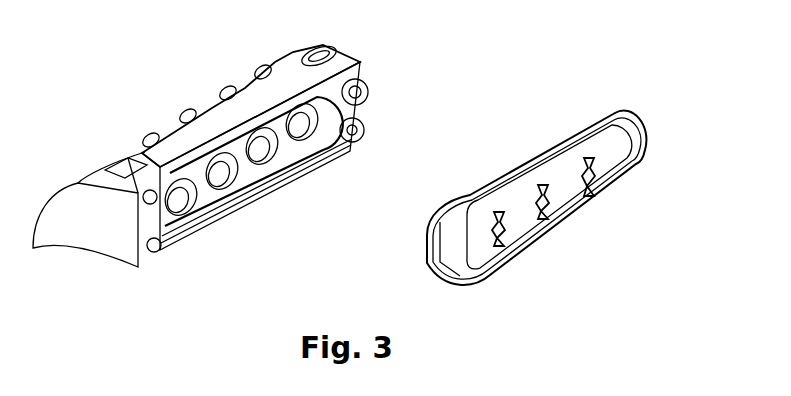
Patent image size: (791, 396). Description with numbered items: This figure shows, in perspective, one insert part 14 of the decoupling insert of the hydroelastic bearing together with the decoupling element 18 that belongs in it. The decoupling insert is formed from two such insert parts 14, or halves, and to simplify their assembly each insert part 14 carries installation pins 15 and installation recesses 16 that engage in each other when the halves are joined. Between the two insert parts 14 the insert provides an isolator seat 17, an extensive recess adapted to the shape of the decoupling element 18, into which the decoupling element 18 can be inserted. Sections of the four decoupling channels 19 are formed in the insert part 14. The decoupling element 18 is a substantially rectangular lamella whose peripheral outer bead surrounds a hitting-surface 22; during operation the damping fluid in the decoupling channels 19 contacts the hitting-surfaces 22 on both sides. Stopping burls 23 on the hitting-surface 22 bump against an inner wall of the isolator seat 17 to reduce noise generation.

The insert part 14 is at (82, 228).
The installation pin 15 is at (178, 248).
The installation recess 16 is at (148, 192).
The isolator seat 17 is at (302, 97).
The decoupling element 18 is at (647, 118).
The decoupling channel 19 is at (292, 172).
The hitting-surface 22 is at (522, 213).
The stopping burl 23 is at (594, 210).